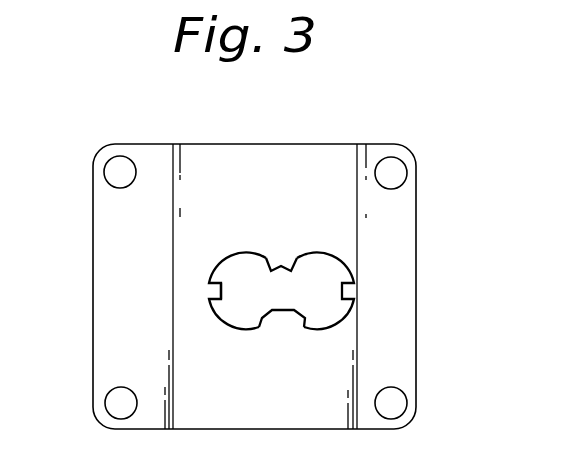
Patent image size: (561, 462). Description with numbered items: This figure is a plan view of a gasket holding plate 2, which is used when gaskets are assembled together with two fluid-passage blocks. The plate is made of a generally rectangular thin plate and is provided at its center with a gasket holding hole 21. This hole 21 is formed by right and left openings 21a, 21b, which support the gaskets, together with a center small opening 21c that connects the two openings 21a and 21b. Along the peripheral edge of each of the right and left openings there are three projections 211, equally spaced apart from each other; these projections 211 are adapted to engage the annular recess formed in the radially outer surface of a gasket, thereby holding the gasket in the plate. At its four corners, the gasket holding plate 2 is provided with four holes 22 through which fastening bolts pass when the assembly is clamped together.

The gasket holding plate 2 is at (230, 115).
The gasket holding hole 21 is at (268, 239).
The left opening 21a is at (237, 250).
The right opening 21b is at (323, 250).
The center small opening 21c is at (276, 273).
The projection 211 is at (200, 295).
The hole 22 is at (133, 412).